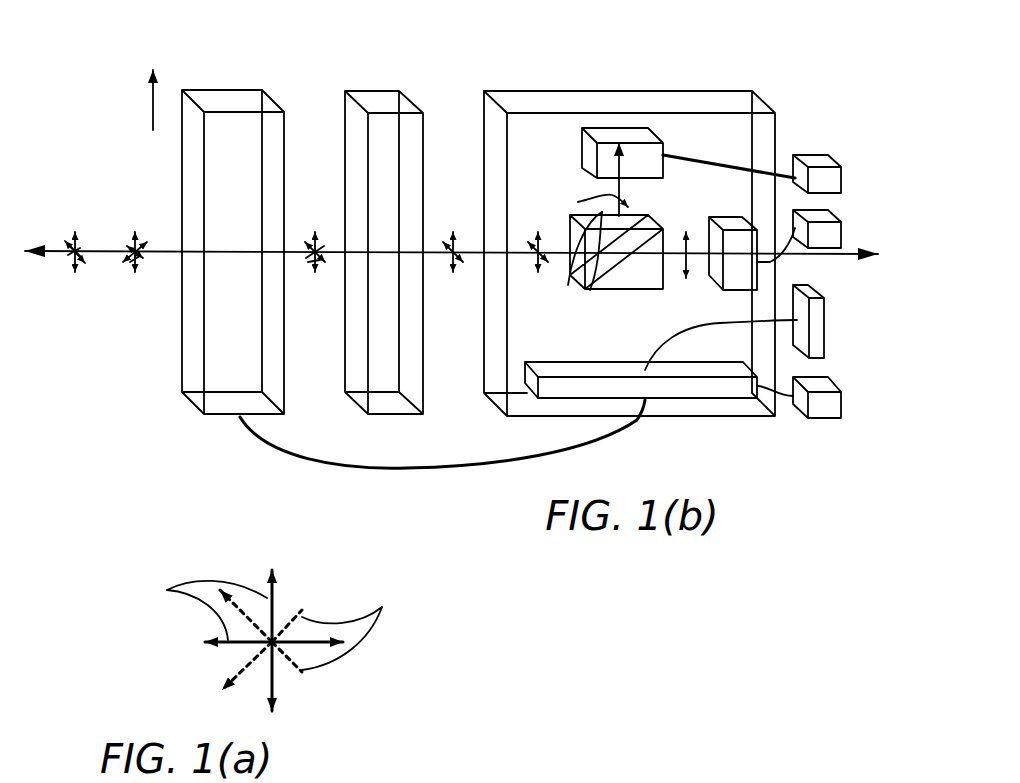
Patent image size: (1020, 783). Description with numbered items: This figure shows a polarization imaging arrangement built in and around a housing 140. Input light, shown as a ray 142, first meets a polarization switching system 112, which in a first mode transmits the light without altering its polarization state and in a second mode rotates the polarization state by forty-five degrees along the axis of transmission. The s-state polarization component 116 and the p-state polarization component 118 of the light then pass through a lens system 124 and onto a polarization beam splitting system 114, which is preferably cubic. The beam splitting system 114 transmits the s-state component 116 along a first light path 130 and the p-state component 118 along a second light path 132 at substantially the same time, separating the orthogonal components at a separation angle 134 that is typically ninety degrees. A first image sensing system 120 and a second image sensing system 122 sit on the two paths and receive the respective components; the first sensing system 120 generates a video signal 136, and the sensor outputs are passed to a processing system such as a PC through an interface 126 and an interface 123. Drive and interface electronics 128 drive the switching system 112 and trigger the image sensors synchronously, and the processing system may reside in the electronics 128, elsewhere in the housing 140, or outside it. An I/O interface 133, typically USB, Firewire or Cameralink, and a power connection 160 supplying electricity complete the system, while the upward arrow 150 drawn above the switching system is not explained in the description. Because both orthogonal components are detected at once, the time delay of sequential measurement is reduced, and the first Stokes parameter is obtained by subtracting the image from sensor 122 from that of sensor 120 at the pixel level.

The polarization switching system 112 is at (230, 95).
The lens system 124 is at (384, 98).
The housing 140 is at (540, 96).
The first image sensing system 120 is at (625, 132).
The first light path 130 is at (628, 165).
The video signal 136 is at (707, 157).
The interface 126 is at (842, 180).
The interface 123 is at (842, 237).
The I/O interface 133 is at (827, 318).
The power connection 160 is at (843, 405).
The drive and interface electronics 128 is at (693, 400).
The reference direction 150 is at (152, 101).
The ray 142 is at (312, 228).
The s-state polarization component 116 is at (318, 250).
The p-state polarization component 118 is at (313, 262).
The second image sensing system 122 is at (733, 217).
The polarization beam splitting system 114 is at (568, 285).
The separation angle 134 is at (590, 290).
The second light path 132 is at (655, 265).